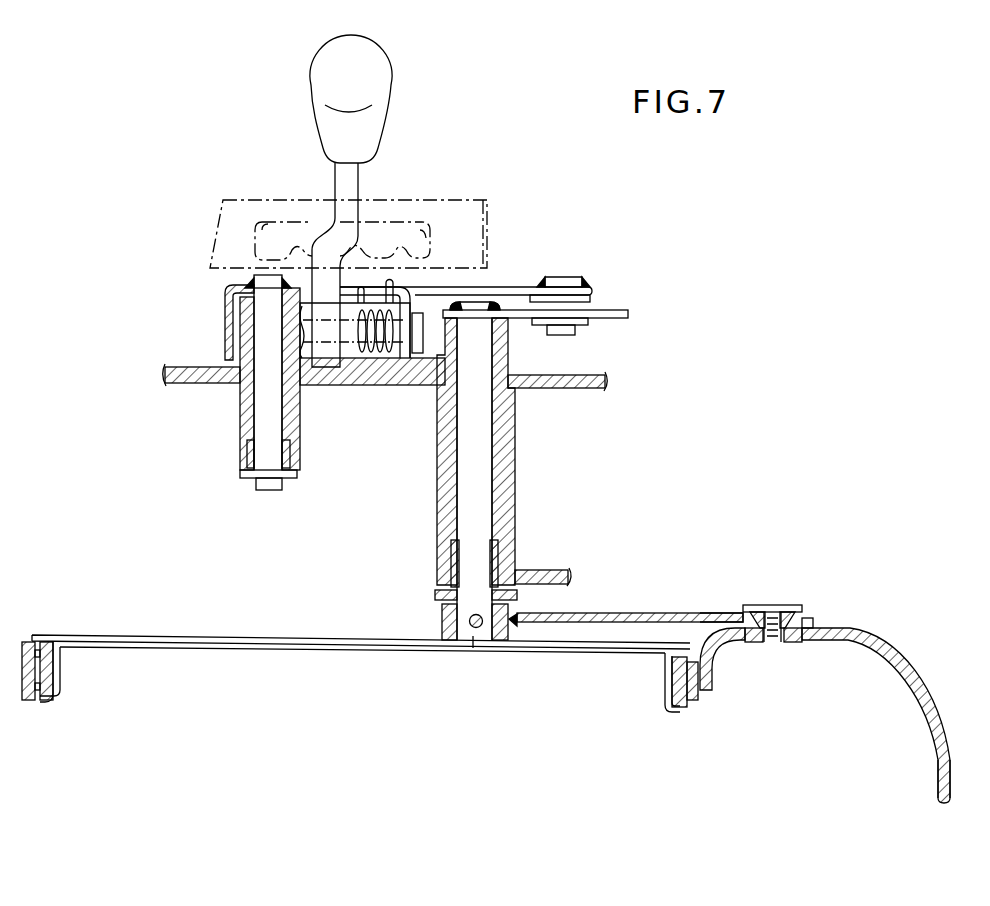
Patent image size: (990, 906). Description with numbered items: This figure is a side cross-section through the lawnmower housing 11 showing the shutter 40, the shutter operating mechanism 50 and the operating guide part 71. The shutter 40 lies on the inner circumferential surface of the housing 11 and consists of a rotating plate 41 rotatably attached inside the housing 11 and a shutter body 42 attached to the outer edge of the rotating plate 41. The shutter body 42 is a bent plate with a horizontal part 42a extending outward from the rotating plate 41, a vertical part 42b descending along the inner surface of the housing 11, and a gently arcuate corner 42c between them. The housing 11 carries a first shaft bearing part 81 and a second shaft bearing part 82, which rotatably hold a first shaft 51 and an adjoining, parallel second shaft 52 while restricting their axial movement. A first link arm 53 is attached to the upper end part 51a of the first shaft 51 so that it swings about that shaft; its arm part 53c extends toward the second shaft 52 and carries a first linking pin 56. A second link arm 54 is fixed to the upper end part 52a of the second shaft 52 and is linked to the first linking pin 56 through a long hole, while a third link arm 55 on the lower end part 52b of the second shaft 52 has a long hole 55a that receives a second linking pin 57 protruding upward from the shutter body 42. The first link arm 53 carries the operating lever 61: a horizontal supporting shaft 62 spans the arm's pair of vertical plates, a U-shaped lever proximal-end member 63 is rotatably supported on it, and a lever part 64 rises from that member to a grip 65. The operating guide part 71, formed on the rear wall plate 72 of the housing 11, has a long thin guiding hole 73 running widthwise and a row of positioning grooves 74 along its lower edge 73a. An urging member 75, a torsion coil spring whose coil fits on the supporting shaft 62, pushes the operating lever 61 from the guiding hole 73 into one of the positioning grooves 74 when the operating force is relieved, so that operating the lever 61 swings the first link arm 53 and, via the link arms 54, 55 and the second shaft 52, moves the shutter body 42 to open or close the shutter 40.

The housing 11 is at (575, 385).
The shutter 40 is at (825, 688).
The rotating plate 41 is at (697, 712).
The shutter body 42 is at (825, 717).
The horizontal part 42a is at (818, 642).
The vertical part 42b is at (895, 779).
The corner 42c is at (893, 666).
The shutter operating mechanism 50 is at (755, 246).
The first shaft 51 is at (268, 391).
The upper end part 51a is at (262, 274).
The second shaft 52 is at (478, 455).
The upper end part 52a is at (486, 326).
The lower end part 52b is at (477, 642).
The first link arm 53 is at (223, 320).
The arm part 53c is at (498, 286).
The second link arm 54 is at (593, 312).
The third link arm 55 is at (611, 613).
The long hole 55a is at (702, 613).
The first linking pin 56 is at (563, 283).
The second linking pin 57 is at (786, 605).
The operating lever 61 is at (388, 51).
The supporting shaft 62 is at (359, 352).
The lever proximal-end member 63 is at (327, 368).
The lever part 64 is at (354, 185).
The grip 65 is at (382, 84).
The operating guide part 71 is at (476, 200).
The rear wall plate 72 is at (224, 214).
The guiding hole 73 is at (305, 221).
The lower edge 73a is at (290, 247).
The positioning grooves 74 is at (446, 220).
The urging member 75 is at (385, 352).
The first shaft bearing part 81 is at (246, 418).
The second shaft bearing part 82 is at (508, 495).